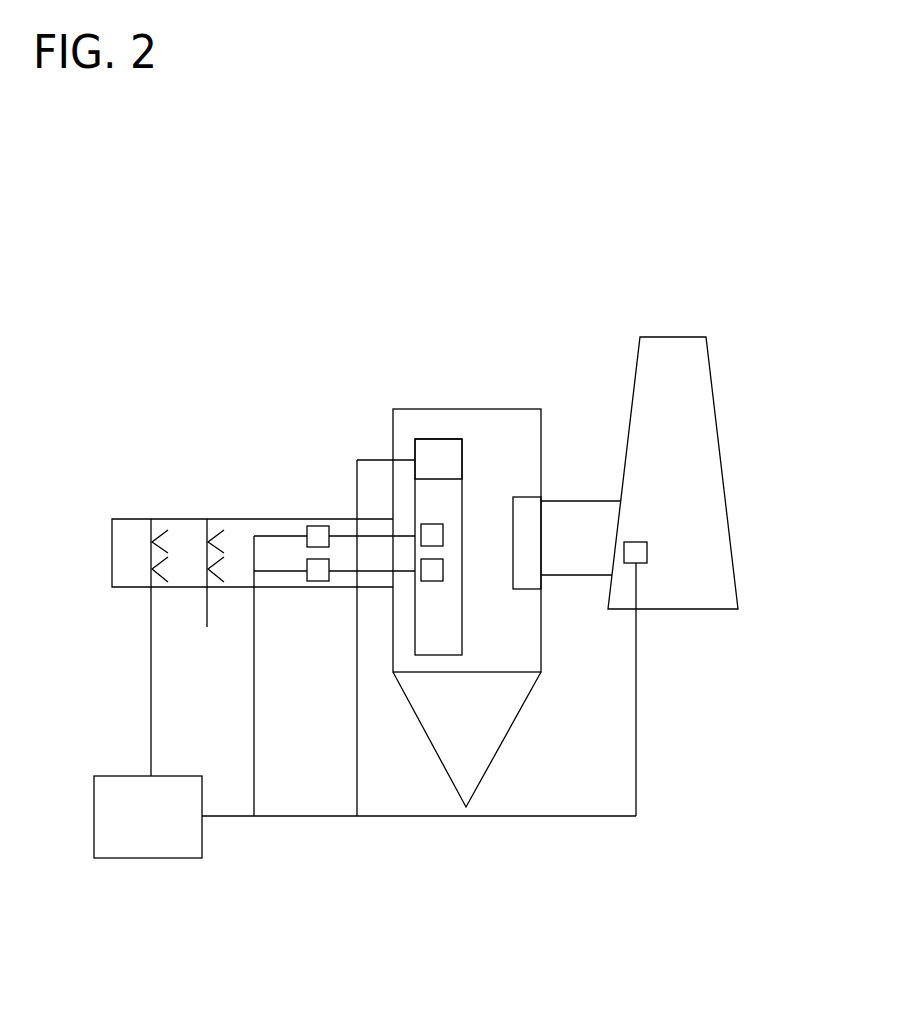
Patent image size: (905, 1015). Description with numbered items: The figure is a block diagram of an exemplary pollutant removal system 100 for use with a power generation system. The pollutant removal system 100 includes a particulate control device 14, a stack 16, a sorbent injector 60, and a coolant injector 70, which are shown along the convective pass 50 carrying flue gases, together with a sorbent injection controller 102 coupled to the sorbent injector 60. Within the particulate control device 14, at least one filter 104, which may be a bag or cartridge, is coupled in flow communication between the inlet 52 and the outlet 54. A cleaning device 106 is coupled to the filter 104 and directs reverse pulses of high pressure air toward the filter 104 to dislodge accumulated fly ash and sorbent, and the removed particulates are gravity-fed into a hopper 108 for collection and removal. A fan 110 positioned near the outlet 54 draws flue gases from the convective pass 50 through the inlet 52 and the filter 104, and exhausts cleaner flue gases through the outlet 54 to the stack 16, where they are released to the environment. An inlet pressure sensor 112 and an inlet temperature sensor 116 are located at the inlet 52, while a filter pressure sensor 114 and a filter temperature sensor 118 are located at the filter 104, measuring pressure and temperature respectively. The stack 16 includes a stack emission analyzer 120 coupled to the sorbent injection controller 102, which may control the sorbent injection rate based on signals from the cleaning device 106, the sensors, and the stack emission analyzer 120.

The pollutant removal system 100 is at (292, 257).
The particulate control device 14 is at (510, 409).
The stack 16 is at (673, 337).
The convective pass 50 is at (235, 519).
The inlet 52 is at (348, 549).
The outlet 54 is at (560, 534).
The sorbent injector 60 is at (151, 530).
The coolant injector 70 is at (207, 530).
The sorbent injection controller 102 is at (112, 776).
The filter 104 is at (462, 490).
The cleaning device 106 is at (428, 439).
The hopper 108 is at (513, 720).
The fan 110 is at (513, 581).
The inlet pressure sensor 112 is at (307, 535).
The filter pressure sensor 114 is at (432, 524).
The inlet temperature sensor 116 is at (307, 573).
The filter temperature sensor 118 is at (432, 581).
The stack emission analyzer 120 is at (636, 542).